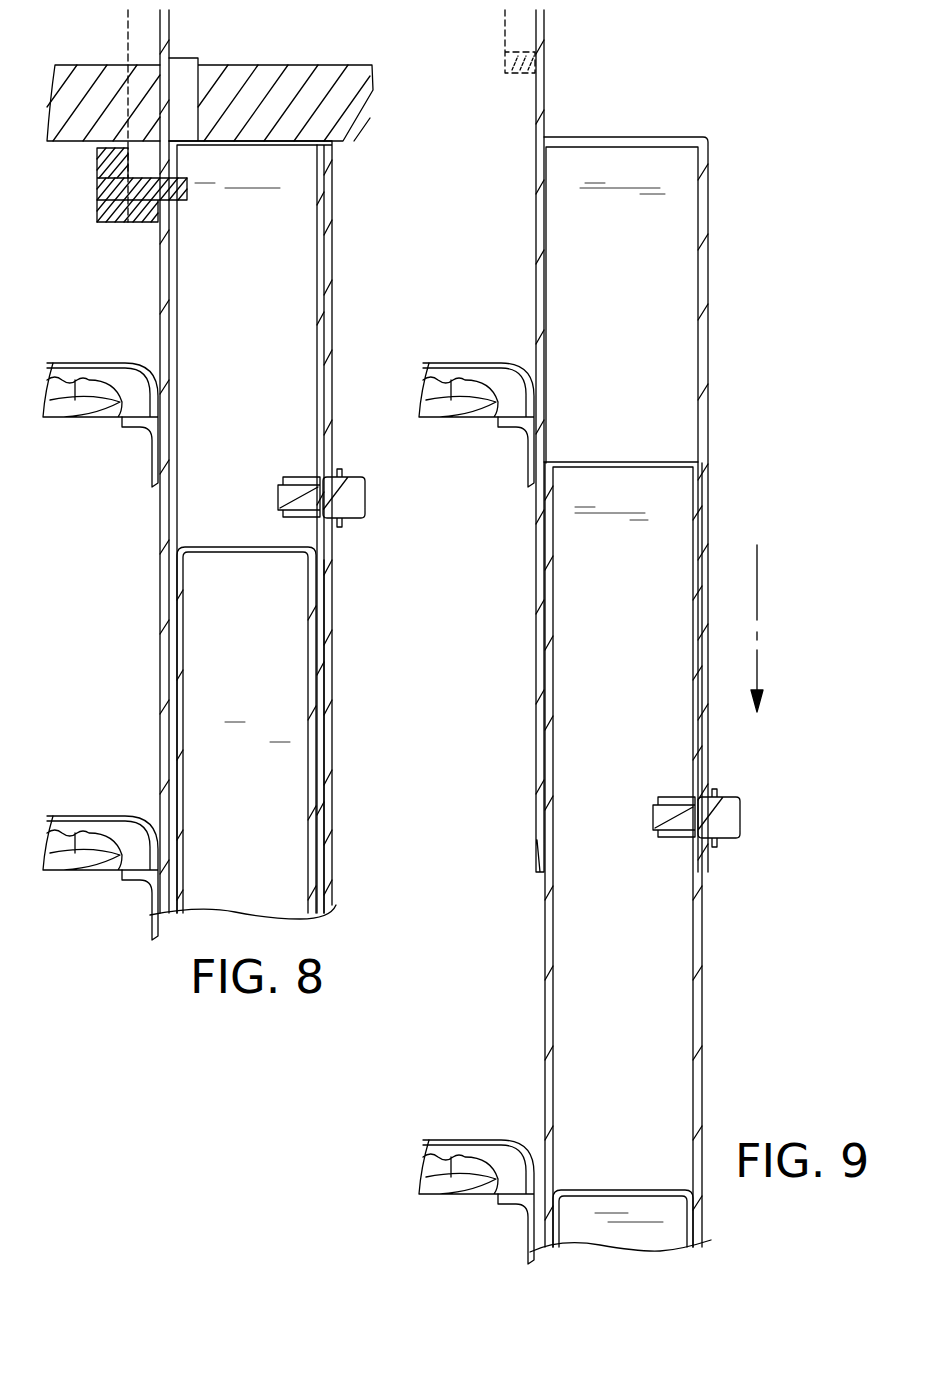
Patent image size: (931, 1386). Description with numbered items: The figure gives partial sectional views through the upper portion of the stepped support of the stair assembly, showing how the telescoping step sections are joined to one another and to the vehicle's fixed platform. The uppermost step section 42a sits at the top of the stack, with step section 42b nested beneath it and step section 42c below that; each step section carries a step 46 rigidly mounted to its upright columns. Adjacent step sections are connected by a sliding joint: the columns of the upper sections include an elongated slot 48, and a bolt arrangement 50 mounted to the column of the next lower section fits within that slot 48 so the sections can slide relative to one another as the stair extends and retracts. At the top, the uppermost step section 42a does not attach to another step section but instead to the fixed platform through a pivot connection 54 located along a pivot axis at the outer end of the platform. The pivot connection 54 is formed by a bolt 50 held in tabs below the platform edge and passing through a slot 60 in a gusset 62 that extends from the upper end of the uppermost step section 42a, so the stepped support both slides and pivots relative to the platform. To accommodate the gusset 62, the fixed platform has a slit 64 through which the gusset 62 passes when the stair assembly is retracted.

In FIG. 8, the uppermost step section 42a is at (333, 213).
In FIG. 9, the uppermost step section 42a is at (709, 263).
In FIG. 8, the step section 42b is at (330, 311).
In FIG. 9, the step section 42b is at (703, 1031).
In FIG. 8, the step section 42c is at (318, 889).
In FIG. 8, the step 46 is at (59, 390).
In FIG. 9, the step 46 is at (435, 390).
In FIG. 8, the elongated slot 48 is at (327, 797).
In FIG. 9, the elongated slot 48 is at (709, 513).
In FIG. 8, the bolt arrangement 50 is at (353, 495).
In FIG. 9, the bolt arrangement 50 is at (728, 815).
In FIG. 8, the pivot connection 54 is at (97, 185).
In FIG. 8, the slot 60 is at (125, 46).
In FIG. 9, the slot 60 is at (519, 45).
In FIG. 8, the gusset 62 is at (171, 40).
In FIG. 9, the gusset 62 is at (545, 88).
In FIG. 8, the slit 64 is at (245, 64).